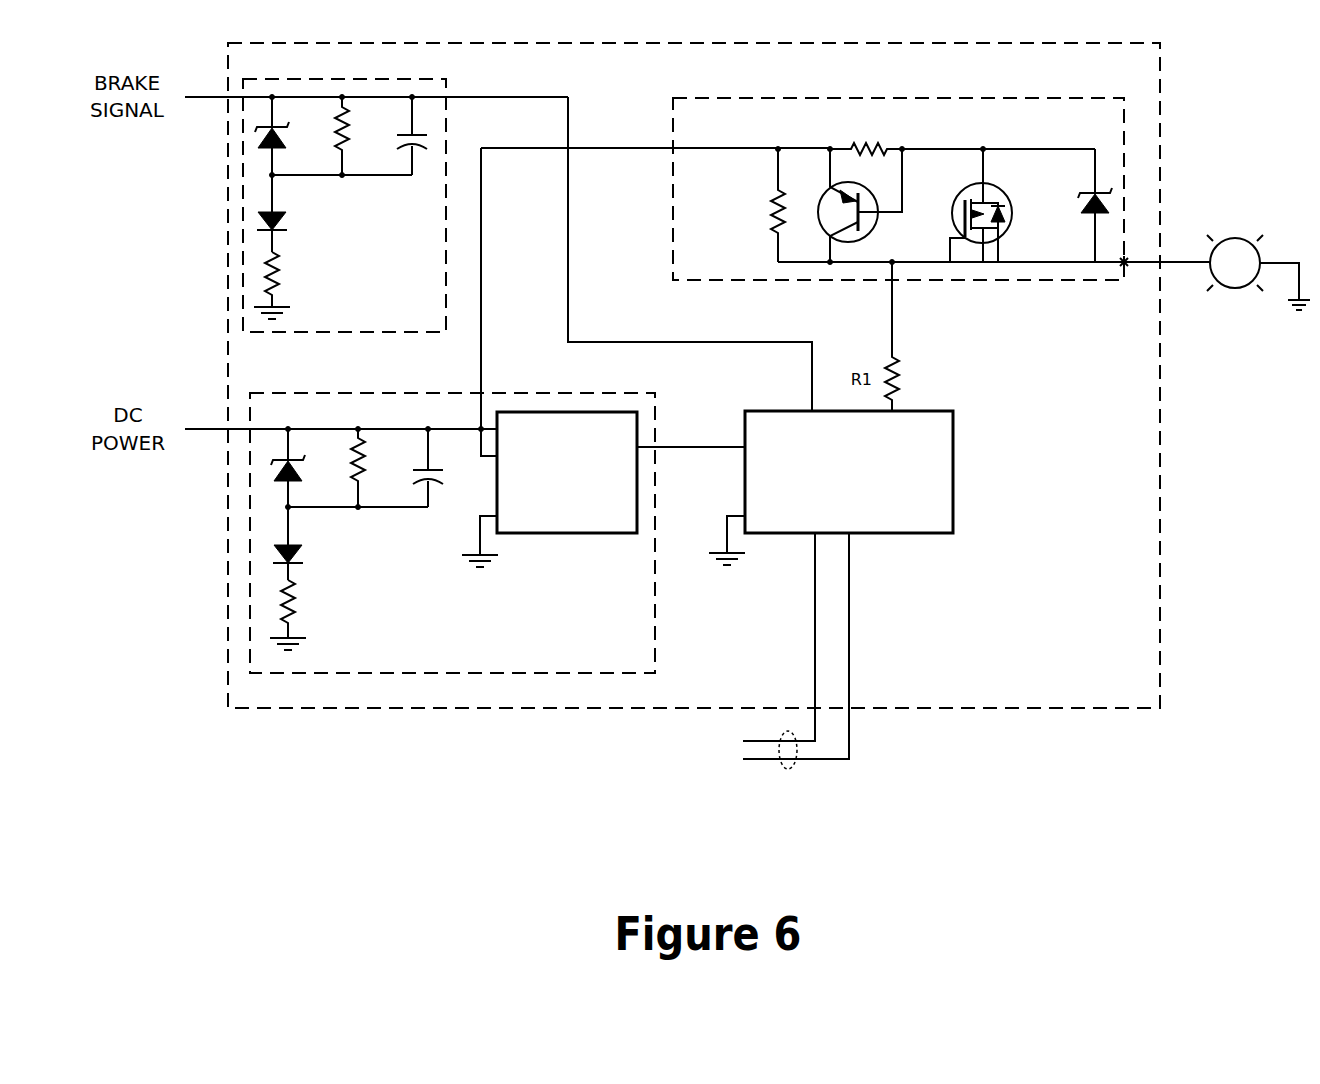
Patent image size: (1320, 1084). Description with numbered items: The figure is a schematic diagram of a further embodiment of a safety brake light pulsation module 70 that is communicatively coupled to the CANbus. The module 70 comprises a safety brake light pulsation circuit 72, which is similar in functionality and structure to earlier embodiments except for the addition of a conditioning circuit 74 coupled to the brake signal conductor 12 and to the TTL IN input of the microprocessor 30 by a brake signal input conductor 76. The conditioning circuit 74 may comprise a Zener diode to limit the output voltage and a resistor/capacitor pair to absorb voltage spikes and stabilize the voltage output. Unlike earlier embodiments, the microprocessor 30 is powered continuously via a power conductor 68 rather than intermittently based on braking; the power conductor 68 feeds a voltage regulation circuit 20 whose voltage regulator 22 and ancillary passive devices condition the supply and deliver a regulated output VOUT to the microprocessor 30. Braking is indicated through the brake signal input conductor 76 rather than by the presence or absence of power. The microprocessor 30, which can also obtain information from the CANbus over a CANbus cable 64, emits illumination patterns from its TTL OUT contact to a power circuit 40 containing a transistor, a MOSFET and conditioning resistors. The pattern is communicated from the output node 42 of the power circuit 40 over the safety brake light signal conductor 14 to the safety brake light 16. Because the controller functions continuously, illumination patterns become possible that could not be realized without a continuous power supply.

The brake signal conductor 12 is at (200, 96).
The safety brake light signal conductor 14 is at (1178, 262).
The safety brake light 16 is at (1236, 238).
The voltage regulation circuit 20 is at (452, 507).
The voltage regulator 22 is at (545, 412).
The microprocessor 30 is at (953, 470).
The power circuit 40 is at (890, 98).
The output node 42 is at (1126, 266).
The CANbus cable 64 is at (789, 770).
The power conductor 68 is at (204, 429).
The safety brake light pulsation module 70 is at (212, 216).
The safety brake light pulsation circuit 72 is at (232, 307).
The conditioning circuit 74 is at (447, 141).
The brake signal input conductor 76 is at (635, 342).